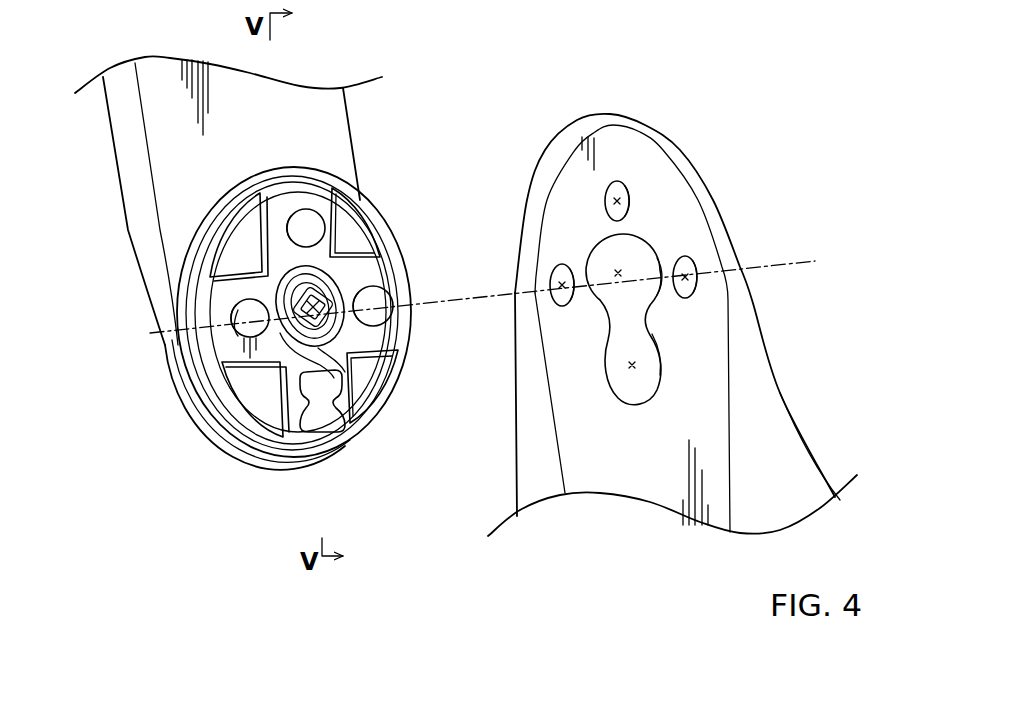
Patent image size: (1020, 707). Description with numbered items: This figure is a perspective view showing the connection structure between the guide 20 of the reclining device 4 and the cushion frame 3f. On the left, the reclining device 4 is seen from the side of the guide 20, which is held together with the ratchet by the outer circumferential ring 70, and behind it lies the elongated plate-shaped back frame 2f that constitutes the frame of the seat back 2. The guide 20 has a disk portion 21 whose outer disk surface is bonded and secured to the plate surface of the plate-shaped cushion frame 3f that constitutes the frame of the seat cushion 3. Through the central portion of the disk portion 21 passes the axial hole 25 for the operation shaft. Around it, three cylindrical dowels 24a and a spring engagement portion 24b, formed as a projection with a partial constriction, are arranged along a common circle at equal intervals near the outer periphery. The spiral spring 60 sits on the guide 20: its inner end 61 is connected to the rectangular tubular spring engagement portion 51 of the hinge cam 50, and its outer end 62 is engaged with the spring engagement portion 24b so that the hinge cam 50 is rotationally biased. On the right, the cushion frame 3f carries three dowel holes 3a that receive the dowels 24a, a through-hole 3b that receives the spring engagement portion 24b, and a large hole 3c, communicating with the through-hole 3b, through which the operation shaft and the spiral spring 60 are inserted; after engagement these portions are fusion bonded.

The back frame 2f is at (158, 93).
The seat back 2 is at (228, 179).
The outer circumferential ring 70 is at (232, 204).
The reclining device 4 is at (277, 319).
The dowels 24a is at (309, 226).
The spiral spring 60 is at (362, 293).
The inner end 61 is at (322, 292).
The axial hole 25 is at (302, 297).
The guide 20 is at (350, 314).
The disk portion 21 is at (373, 383).
The outer end 62 is at (343, 400).
The spring engagement portion 24b is at (323, 397).
The spring engagement portion 51 is at (238, 310).
The hinge cam 50 is at (151, 324).
The cushion frame 3f is at (667, 177).
The seat cushion 3 is at (672, 313).
The dowel holes 3a is at (563, 285).
The large hole 3c is at (619, 268).
The through-hole 3b is at (638, 364).